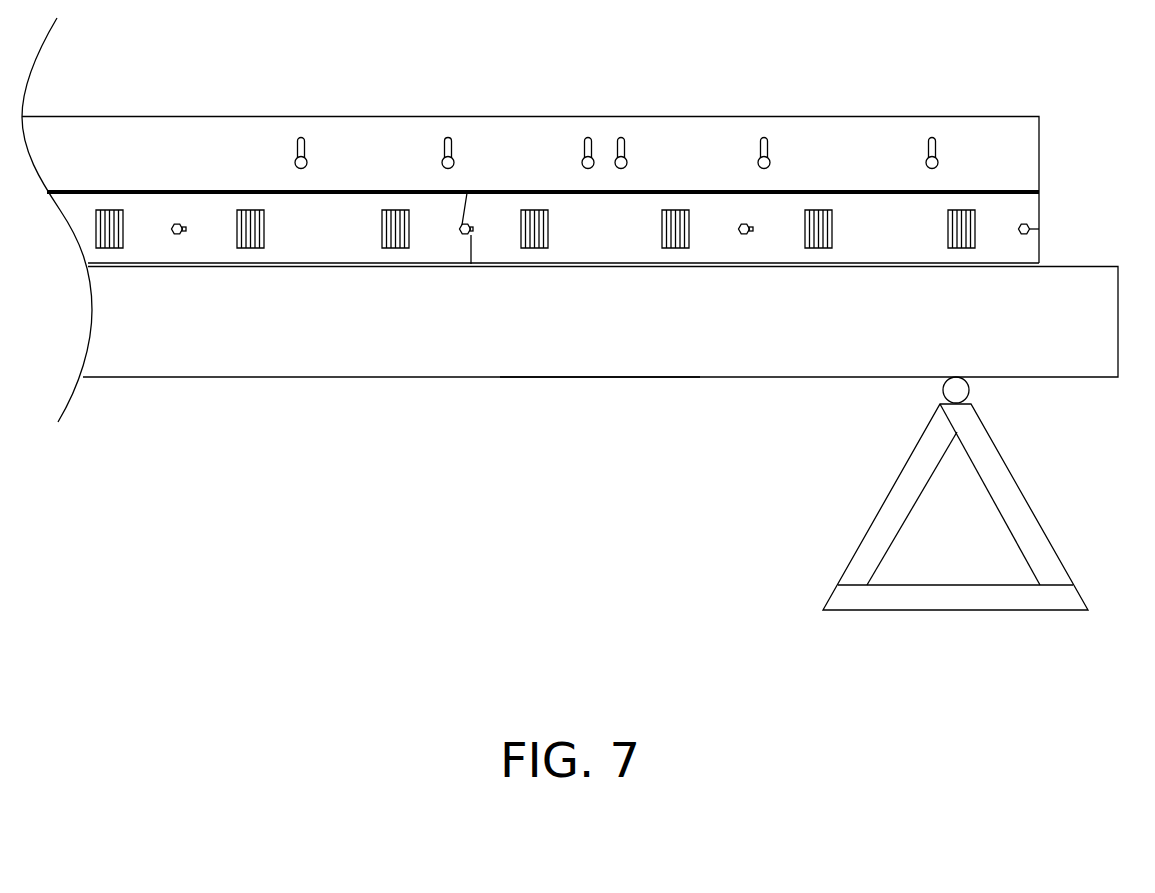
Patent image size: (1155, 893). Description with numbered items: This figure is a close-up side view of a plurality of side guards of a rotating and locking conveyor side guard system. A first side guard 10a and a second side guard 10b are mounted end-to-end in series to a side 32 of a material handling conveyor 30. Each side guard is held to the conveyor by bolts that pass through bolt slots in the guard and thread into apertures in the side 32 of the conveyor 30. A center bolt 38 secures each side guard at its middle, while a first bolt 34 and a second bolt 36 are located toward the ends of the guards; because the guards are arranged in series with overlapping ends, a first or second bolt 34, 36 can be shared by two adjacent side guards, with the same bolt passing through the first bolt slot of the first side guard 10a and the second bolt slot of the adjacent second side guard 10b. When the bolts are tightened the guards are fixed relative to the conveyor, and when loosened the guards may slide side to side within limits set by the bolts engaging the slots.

The first side guard 10a is at (836, 277).
The second side guard 10b is at (235, 288).
The material handling conveyor 30 is at (493, 398).
The side 32 is at (618, 336).
The first bolt 34 is at (467, 223).
The second bolt 36 is at (1028, 223).
The center bolt 38 is at (177, 223).